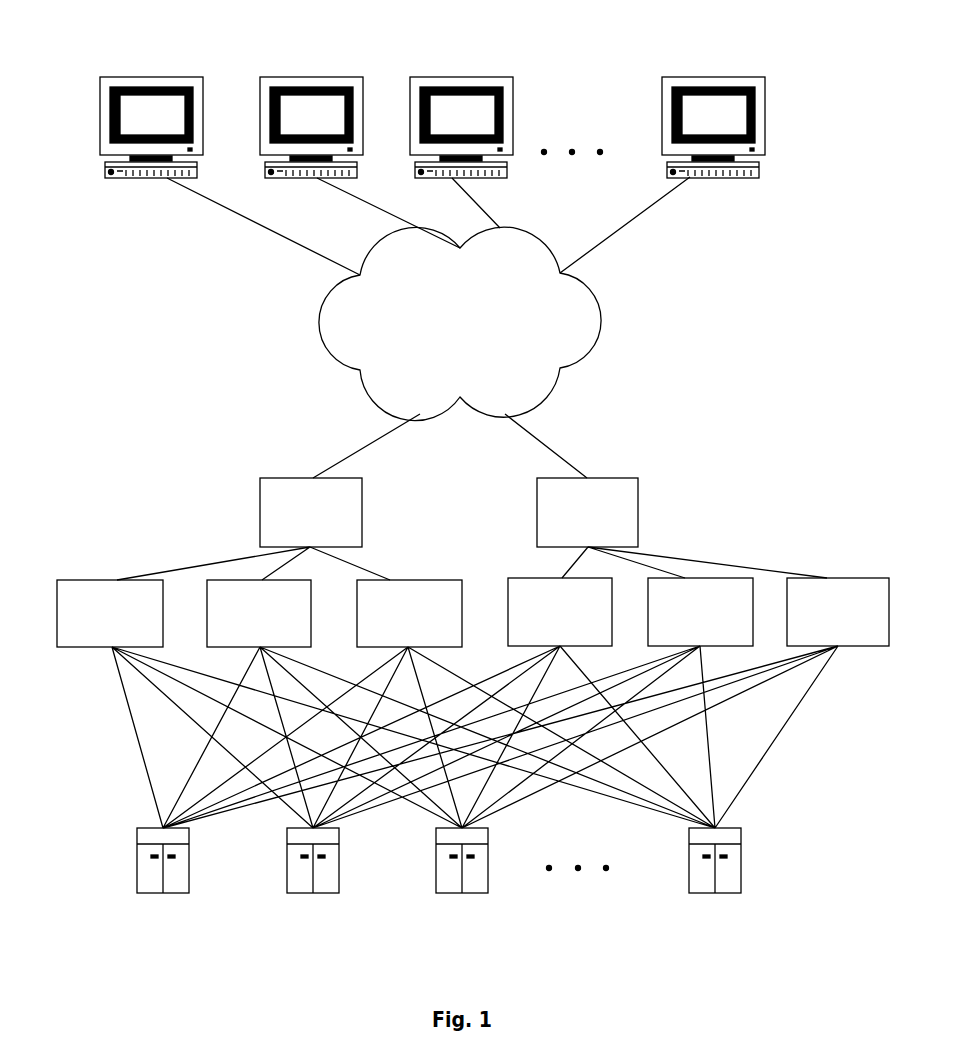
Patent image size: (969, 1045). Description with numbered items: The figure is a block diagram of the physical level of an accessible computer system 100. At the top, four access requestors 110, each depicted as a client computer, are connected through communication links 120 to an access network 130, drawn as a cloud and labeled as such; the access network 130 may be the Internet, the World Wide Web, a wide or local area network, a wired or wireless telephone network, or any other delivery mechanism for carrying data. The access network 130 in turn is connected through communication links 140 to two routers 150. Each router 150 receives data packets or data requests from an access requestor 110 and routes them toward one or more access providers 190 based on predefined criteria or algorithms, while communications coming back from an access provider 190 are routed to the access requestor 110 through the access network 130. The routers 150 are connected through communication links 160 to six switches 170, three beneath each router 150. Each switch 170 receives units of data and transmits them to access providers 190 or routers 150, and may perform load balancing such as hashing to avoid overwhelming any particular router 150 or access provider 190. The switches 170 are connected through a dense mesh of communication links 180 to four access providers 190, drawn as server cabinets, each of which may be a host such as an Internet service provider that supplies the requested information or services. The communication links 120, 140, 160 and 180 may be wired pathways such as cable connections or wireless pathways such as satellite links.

The accessible computer system 100 is at (529, 33).
The access requestor 110 is at (168, 77).
The communication link 120 is at (236, 197).
The access network 130 is at (600, 302).
The communication link 140 is at (360, 450).
The router 150 is at (384, 508).
The communication link 160 is at (223, 560).
The switch 170 is at (57, 623).
The communication link 180 is at (116, 773).
The access provider 190 is at (165, 893).